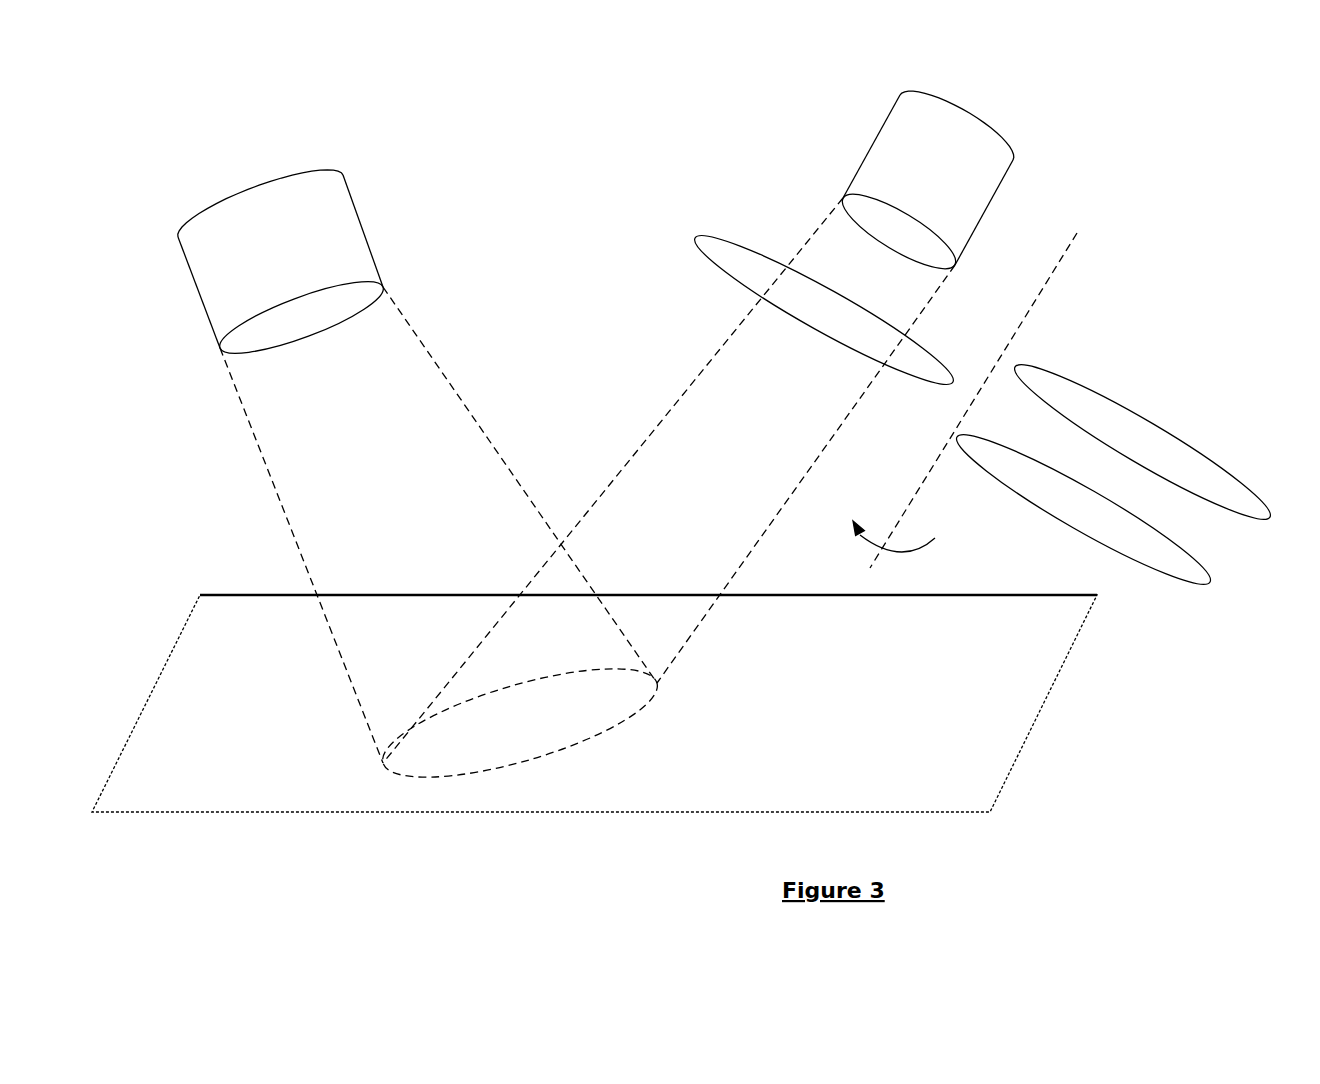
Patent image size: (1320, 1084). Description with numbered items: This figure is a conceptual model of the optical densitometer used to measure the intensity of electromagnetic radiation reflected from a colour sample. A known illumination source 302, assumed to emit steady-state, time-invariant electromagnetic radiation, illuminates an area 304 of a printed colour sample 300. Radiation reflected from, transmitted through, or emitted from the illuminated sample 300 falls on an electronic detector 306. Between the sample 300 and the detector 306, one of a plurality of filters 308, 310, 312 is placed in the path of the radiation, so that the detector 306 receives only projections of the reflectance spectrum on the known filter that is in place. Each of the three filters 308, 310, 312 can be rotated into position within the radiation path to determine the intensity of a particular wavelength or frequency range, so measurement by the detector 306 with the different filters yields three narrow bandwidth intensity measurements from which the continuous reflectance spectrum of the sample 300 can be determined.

The printed colour sample 300 is at (1043, 705).
The illumination source 302 is at (358, 227).
The illuminated area 304 is at (520, 765).
The electronic detector 306 is at (968, 113).
The first filter 308 is at (697, 239).
The second filter 310 is at (1153, 425).
The third filter 312 is at (1210, 587).